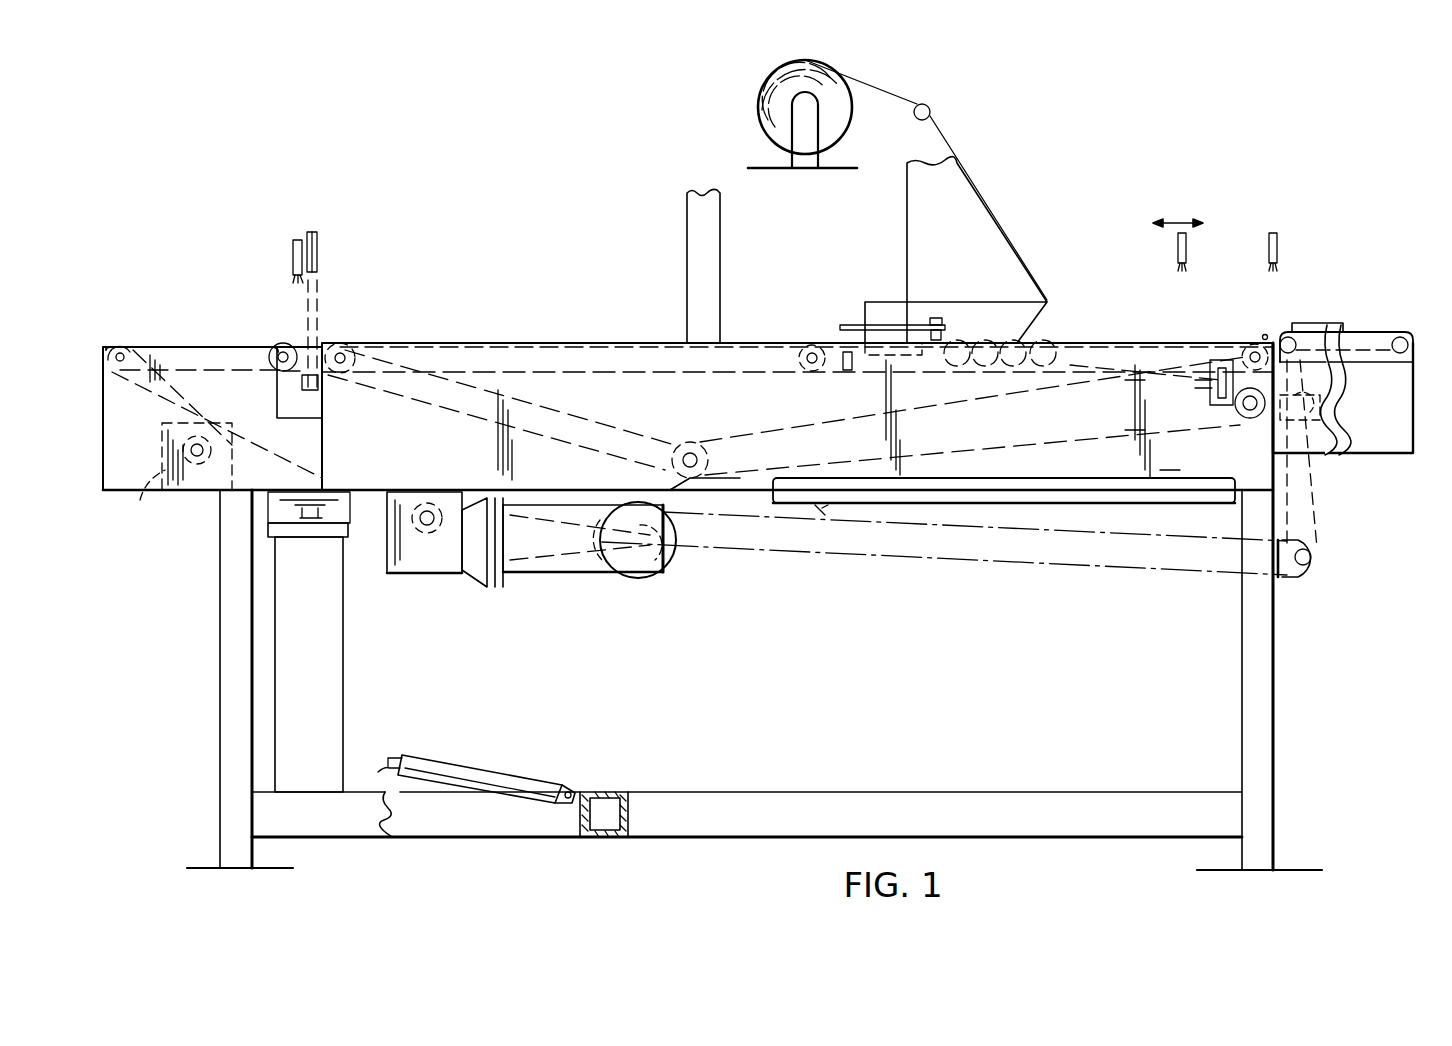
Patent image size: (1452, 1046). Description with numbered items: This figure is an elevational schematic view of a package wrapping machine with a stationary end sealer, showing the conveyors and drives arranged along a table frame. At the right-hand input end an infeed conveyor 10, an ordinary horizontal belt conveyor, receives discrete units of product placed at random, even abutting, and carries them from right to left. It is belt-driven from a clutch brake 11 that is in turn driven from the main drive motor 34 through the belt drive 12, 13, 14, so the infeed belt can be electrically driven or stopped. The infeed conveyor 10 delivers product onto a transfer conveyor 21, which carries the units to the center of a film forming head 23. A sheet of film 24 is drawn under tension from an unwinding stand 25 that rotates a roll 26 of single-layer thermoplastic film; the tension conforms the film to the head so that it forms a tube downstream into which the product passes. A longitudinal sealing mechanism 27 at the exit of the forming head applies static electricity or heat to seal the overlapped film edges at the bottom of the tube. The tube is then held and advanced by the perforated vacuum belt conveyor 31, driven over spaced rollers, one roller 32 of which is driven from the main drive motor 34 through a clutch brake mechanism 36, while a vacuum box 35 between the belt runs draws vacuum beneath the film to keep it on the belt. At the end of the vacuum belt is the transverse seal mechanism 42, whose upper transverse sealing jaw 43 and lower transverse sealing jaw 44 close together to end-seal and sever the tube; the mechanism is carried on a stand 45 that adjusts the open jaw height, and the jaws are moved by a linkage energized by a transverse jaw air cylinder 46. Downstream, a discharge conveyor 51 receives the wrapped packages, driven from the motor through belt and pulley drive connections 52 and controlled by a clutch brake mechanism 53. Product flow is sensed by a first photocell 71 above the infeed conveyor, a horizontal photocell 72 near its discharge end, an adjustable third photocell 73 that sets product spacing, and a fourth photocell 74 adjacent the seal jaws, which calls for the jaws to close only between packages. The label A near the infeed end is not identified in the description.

The infeed conveyor 10 is at (1345, 332).
The clutch brake 11 is at (1315, 428).
The belt drive 12 is at (1318, 505).
The belt drive 13 is at (1310, 568).
The belt drive 14 is at (847, 552).
The transfer conveyor 21 is at (1048, 343).
The film forming head 23 is at (1003, 272).
The film 24 is at (948, 108).
The unwinding stand 25 is at (792, 156).
The roll 26 is at (770, 82).
The longitudinal sealing mechanism 27 is at (838, 370).
The vacuum belt conveyor 31 is at (480, 343).
The roller 32 is at (333, 372).
The main drive motor 34 is at (580, 577).
The vacuum box 35 is at (672, 362).
The clutch brake mechanism 36 is at (673, 550).
The transverse seal mechanism 42 is at (341, 313).
The upper transverse sealing jaw 43 is at (318, 253).
The lower transverse sealing jaw 44 is at (300, 385).
The stand 45 is at (330, 633).
The transverse jaw air cylinder 46 is at (458, 760).
The discharge conveyor 51 is at (145, 347).
The belt and pulley drive connections 52 is at (248, 428).
The clutch brake mechanism 53 is at (147, 504).
The first photocell 71 is at (1278, 250).
The horizontal photocell 72 is at (1265, 334).
The third photocell 73 is at (1187, 250).
The fourth photocell 74 is at (290, 270).
The article A is at (1300, 320).